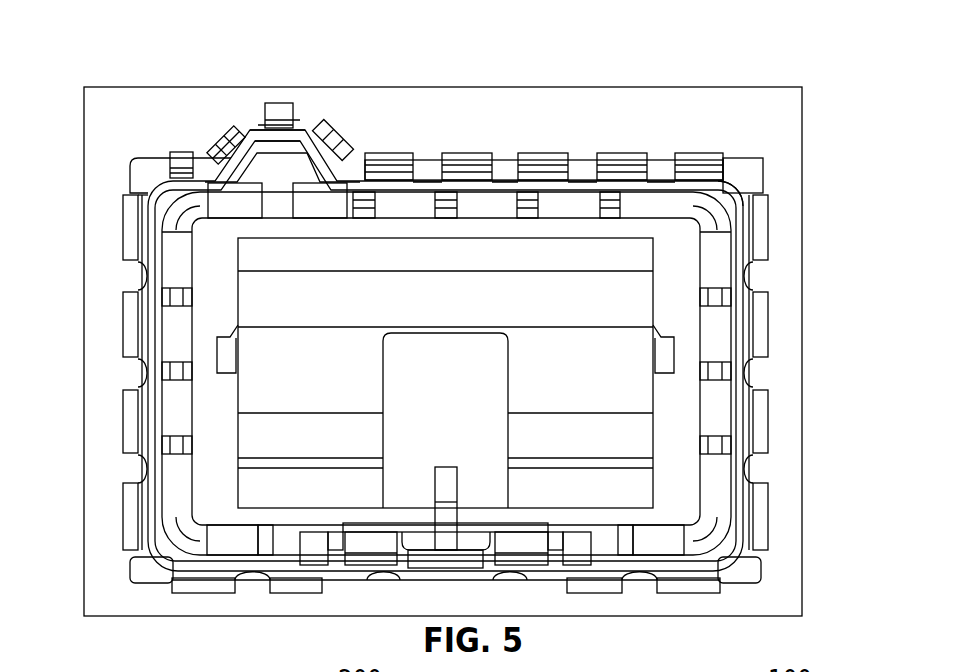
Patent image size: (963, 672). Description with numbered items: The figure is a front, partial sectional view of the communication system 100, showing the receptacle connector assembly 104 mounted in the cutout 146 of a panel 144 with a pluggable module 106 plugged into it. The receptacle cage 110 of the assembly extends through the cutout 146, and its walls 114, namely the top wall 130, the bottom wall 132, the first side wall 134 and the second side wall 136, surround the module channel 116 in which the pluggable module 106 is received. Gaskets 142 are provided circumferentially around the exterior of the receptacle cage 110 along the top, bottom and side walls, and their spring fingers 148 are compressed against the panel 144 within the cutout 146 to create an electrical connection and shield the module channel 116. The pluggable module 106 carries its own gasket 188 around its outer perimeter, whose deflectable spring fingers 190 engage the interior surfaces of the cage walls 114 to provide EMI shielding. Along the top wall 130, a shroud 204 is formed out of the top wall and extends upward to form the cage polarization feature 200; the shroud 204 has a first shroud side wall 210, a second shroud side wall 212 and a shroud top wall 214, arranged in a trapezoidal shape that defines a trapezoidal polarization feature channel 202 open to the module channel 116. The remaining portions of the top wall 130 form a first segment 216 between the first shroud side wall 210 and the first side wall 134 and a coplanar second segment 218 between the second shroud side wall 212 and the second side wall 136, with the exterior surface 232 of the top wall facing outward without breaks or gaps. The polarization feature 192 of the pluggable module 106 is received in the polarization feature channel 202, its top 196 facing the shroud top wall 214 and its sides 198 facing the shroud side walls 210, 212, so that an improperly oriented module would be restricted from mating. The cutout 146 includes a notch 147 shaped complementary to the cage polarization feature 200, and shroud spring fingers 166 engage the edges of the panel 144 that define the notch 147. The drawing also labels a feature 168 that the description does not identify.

The communication system 100 is at (705, 67).
The receptacle connector assembly 104 is at (740, 183).
The pluggable module 106 is at (688, 313).
The receptacle cage 110 is at (737, 213).
The walls 114 is at (737, 373).
The module channel 116 is at (720, 540).
The top wall 130 is at (622, 158).
The bottom wall 132 is at (625, 562).
The first side wall 134 is at (155, 370).
The second side wall 136 is at (725, 447).
The gaskets 142 is at (470, 148).
The panel 144 is at (738, 103).
The cutout 146 is at (740, 160).
The notch 147 is at (312, 112).
The spring fingers 148 is at (580, 183).
The shroud spring fingers 166 is at (277, 118).
The terminal 168 is at (147, 195).
The gasket 188 is at (177, 333).
The spring fingers 190 is at (660, 537).
The polarization feature 192 is at (277, 165).
The top 196 is at (266, 143).
The sides 198 is at (233, 150).
The cage polarization feature 200 is at (300, 118).
The polarization feature channel 202 is at (170, 193).
The shroud 204 is at (180, 151).
The first shroud side wall 210 is at (228, 157).
The second shroud side wall 212 is at (385, 150).
The shroud top wall 214 is at (280, 104).
The first segment 216 is at (230, 187).
The second segment 218 is at (428, 182).
The exterior surface 232 is at (505, 177).